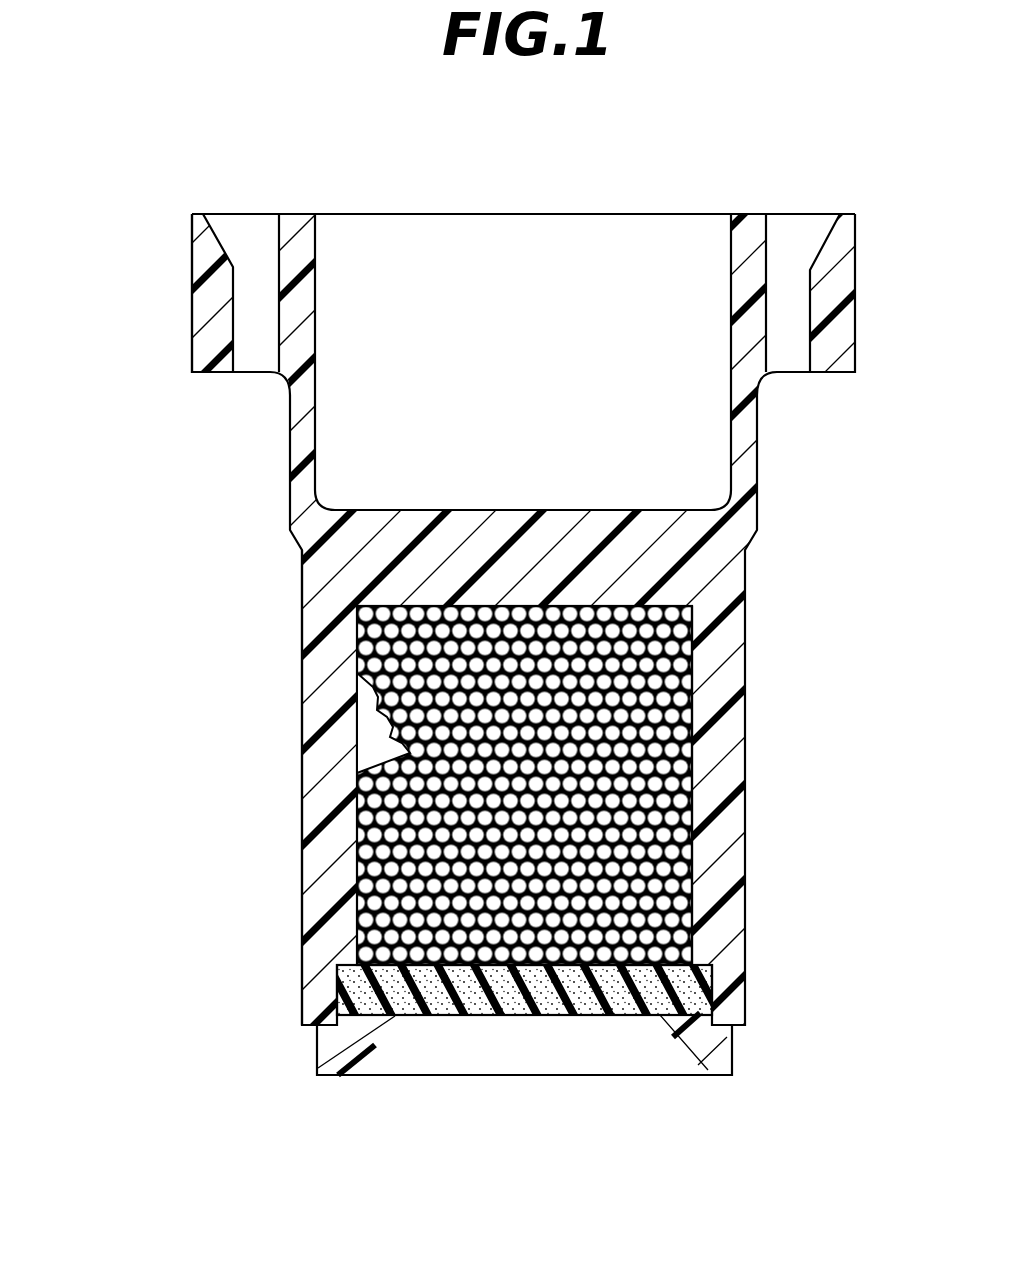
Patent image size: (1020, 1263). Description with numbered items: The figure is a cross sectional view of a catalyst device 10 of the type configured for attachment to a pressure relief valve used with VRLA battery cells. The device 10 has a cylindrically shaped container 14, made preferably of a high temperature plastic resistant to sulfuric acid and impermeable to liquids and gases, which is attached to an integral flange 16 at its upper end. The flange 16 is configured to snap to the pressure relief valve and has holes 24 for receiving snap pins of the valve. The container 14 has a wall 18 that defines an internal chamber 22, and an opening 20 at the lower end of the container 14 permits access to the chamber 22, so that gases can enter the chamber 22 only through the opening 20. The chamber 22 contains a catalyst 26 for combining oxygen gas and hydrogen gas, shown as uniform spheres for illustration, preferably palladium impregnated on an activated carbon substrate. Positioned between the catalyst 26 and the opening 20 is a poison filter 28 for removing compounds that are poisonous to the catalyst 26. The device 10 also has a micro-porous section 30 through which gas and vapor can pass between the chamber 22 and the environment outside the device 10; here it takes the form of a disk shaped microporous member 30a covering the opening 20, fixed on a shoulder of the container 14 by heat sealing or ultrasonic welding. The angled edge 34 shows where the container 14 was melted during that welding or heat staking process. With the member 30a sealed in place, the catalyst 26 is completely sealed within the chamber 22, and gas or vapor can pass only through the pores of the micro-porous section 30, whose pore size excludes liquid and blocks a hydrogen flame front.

The catalyst device 10 is at (298, 562).
The container 14 is at (747, 803).
The flange 16 is at (192, 318).
The wall 18 is at (318, 672).
The opening 20 is at (517, 1037).
The internal chamber 22 is at (367, 727).
The holes 24 is at (252, 228).
The catalyst 26 is at (657, 662).
The poison filter 28 is at (680, 905).
The micro-porous section 30 is at (700, 1017).
The microporous member 30a is at (600, 1017).
The angled edge 34 is at (362, 1040).